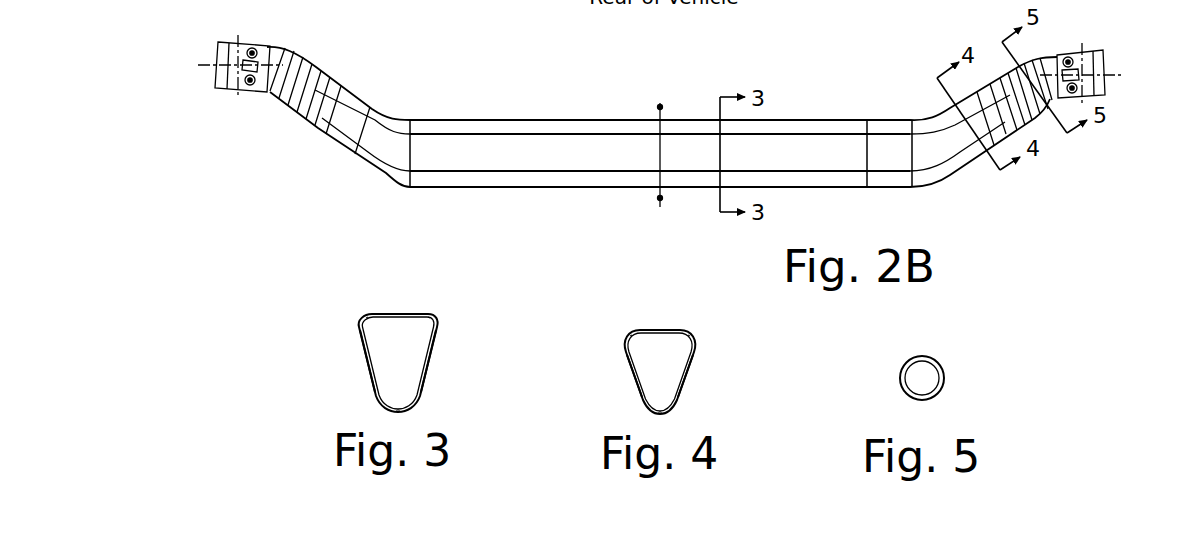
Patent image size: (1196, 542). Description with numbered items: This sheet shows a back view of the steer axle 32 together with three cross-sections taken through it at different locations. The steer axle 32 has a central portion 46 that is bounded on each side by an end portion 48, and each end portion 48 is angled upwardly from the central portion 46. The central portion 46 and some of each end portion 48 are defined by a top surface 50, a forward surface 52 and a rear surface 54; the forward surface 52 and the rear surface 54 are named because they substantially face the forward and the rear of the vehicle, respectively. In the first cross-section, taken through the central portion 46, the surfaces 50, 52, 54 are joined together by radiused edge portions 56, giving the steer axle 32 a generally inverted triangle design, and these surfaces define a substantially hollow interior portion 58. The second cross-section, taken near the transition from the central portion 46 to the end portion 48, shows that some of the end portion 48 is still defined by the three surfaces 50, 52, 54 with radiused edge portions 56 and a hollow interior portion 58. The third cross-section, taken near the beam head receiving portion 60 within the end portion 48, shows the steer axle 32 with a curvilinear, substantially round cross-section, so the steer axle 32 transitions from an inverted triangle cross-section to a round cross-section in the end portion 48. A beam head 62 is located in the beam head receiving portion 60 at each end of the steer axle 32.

In FIG. 2B, the steer axle 32 is at (526, 128).
In FIG. 3, the steer axle 32 is at (382, 392).
In FIG. 4, the steer axle 32 is at (639, 390).
In FIG. 5, the steer axle 32 is at (903, 390).
In FIG. 2B, the central portion 46 is at (573, 204).
In FIG. 2B, the end portion 48 is at (361, 77).
In FIG. 3, the end portion 48 is at (422, 284).
In FIG. 4, the end portion 48 is at (682, 304).
In FIG. 5, the end portion 48 is at (945, 350).
In FIG. 2B, the top surface 50 is at (810, 124).
In FIG. 3, the top surface 50 is at (398, 313).
In FIG. 4, the top surface 50 is at (658, 331).
In FIG. 3, the forward surface 52 is at (367, 362).
In FIG. 4, the forward surface 52 is at (628, 373).
In FIG. 2B, the rear surface 54 is at (843, 163).
In FIG. 3, the rear surface 54 is at (428, 375).
In FIG. 4, the rear surface 54 is at (689, 382).
In FIG. 3, the radiused edge portion 56 is at (361, 314).
In FIG. 4, the radiused edge portion 56 is at (622, 335).
In FIG. 3, the hollow interior portion 58 is at (412, 352).
In FIG. 4, the hollow interior portion 58 is at (672, 362).
In FIG. 5, the hollow interior portion 58 is at (927, 378).
In FIG. 2B, the beam head receiving portion 60 is at (284, 115).
In FIG. 2B, the beam head 62 is at (227, 72).